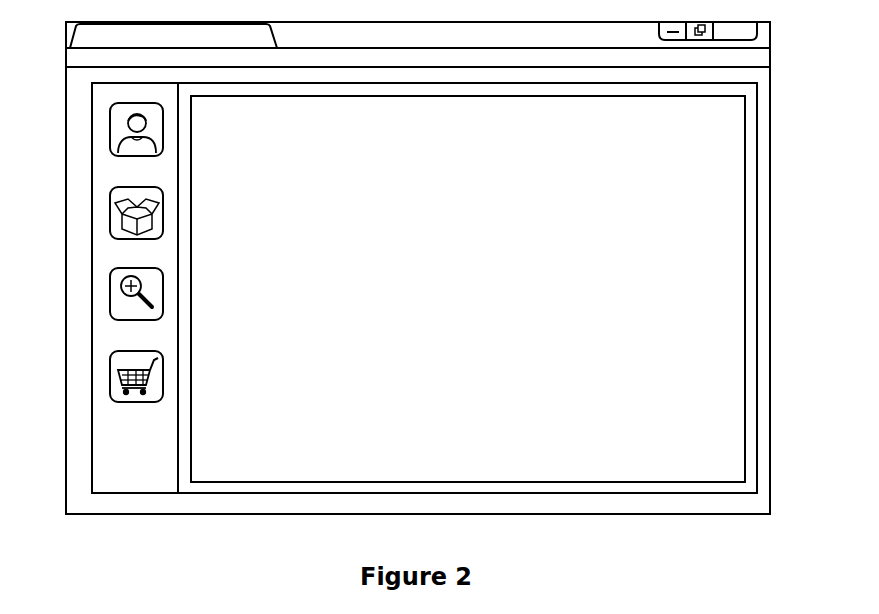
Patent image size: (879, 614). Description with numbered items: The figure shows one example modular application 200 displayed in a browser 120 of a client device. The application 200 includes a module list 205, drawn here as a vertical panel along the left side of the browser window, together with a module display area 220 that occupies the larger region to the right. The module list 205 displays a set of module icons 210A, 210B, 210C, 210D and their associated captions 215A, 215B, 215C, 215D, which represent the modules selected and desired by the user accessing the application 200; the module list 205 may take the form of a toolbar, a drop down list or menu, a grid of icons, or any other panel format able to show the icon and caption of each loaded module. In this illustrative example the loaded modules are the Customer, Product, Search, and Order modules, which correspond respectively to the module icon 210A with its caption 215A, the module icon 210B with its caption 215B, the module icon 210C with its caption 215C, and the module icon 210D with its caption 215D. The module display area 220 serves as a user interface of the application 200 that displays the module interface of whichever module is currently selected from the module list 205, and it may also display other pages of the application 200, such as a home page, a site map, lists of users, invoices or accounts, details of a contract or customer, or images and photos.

The browser 120 is at (770, 56).
The modular application 200 is at (92, 125).
The module list 205 is at (103, 281).
The module icon 210A is at (163, 130).
The module icon 210B is at (163, 208).
The module icon 210C is at (163, 289).
The module icon 210D is at (163, 369).
The caption 215A is at (173, 168).
The caption 215B is at (167, 249).
The caption 215C is at (168, 331).
The caption 215D is at (165, 411).
The module display area 220 is at (584, 285).